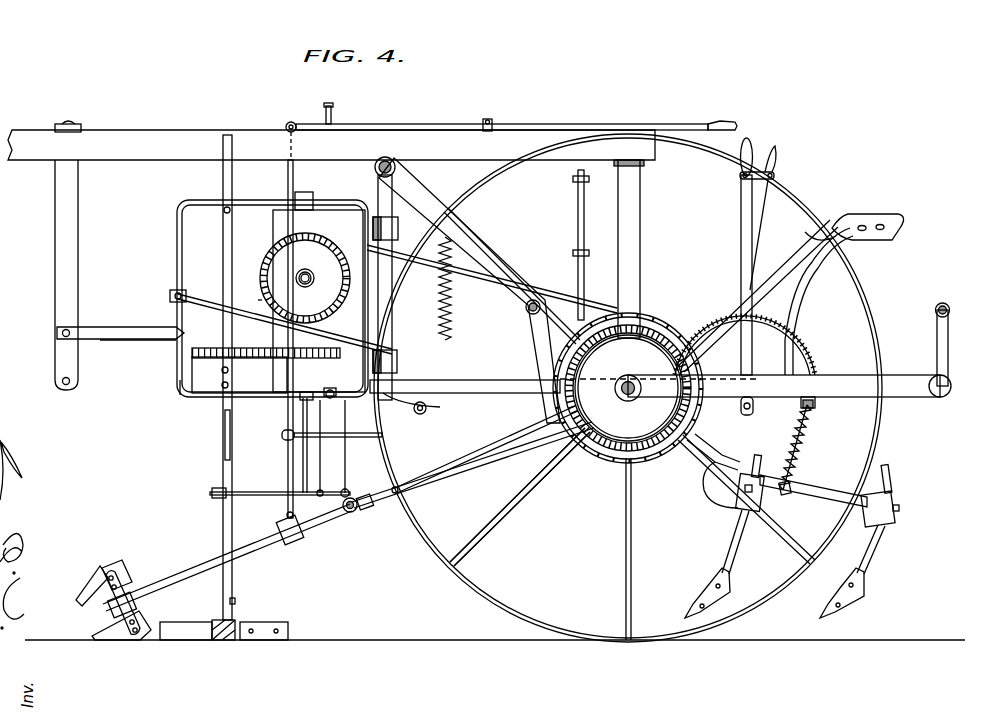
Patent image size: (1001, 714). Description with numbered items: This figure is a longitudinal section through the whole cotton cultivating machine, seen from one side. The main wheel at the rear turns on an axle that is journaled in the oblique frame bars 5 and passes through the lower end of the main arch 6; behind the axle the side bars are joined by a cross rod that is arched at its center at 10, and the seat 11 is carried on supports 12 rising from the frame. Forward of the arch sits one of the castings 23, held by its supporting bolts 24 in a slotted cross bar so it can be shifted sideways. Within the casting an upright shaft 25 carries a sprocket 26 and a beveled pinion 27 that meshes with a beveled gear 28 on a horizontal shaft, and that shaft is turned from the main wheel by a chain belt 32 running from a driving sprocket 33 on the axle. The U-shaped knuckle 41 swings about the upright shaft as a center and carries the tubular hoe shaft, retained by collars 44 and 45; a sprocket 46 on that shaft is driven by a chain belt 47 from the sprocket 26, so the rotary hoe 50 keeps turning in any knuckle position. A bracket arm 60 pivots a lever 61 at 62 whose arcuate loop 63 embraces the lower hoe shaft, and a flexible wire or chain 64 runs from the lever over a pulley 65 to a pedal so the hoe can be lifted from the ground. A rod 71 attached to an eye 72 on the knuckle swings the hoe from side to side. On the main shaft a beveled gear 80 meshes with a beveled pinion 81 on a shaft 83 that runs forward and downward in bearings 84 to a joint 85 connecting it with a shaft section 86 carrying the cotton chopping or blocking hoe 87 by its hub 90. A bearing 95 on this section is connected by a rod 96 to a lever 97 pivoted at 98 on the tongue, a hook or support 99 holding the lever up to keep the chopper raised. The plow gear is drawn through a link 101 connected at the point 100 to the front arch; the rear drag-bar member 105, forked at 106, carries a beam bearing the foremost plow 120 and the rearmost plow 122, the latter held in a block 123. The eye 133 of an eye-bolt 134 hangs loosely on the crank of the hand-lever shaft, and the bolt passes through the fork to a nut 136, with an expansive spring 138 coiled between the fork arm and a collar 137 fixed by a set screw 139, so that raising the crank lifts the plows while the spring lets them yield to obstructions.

The oblique frame bars 5 is at (465, 240).
The arch 6 is at (640, 248).
The arch of cross rod 10 is at (946, 304).
The seat 11 is at (880, 216).
The supports 12 is at (806, 300).
The castings 23 is at (335, 210).
The supporting bolts 24 is at (450, 195).
The upright shaft 25 is at (308, 262).
The sprocket 26 is at (280, 348).
The beveled pinion 27 is at (312, 312).
The beveled gear 28 is at (262, 282).
The chain belt 32 is at (545, 290).
The driving sprocket 33 is at (590, 305).
The knuckle 41 is at (215, 201).
The collar 44 is at (224, 210).
The collar 45 is at (182, 396).
The sprocket 46 is at (203, 360).
The chain belt 47 is at (255, 360).
The hoe 50 is at (266, 622).
The bracket arm 60 is at (360, 438).
The lever 61 is at (266, 490).
The pivot 62 is at (350, 492).
The loop 63 is at (212, 493).
The flexible wire or chain 64 is at (462, 380).
The pulley 65 is at (331, 398).
The rod 71 is at (200, 293).
The bearing or eye 72 is at (170, 295).
The beveled gear 80 is at (628, 388).
The beveled pinion 81 is at (592, 405).
The shaft 83 is at (452, 468).
The bearings 84 is at (540, 477).
The clevis 85 is at (352, 514).
The shaft section 86 is at (256, 548).
The cotton chopping or blocking hoe 87 is at (122, 566).
The hub 90 is at (140, 604).
The bearing 95 is at (298, 536).
The rod 96 is at (274, 429).
The lever 97 is at (440, 123).
The pivot 98 is at (491, 120).
The hook or support 99 is at (333, 110).
The connection point 100 is at (57, 333).
The link 101 is at (112, 340).
The rear member of drag bar 105 is at (680, 468).
The fork 106 is at (402, 412).
The foremost plow 120 is at (704, 592).
The rearmost plow 122 is at (840, 598).
The block 123 is at (893, 502).
The eye 133 is at (815, 392).
The eye-bolt 134 is at (810, 428).
The nut 136 is at (790, 496).
The collar 137 is at (800, 408).
The expansive spring 138 is at (800, 450).
The set screw 139 is at (817, 402).